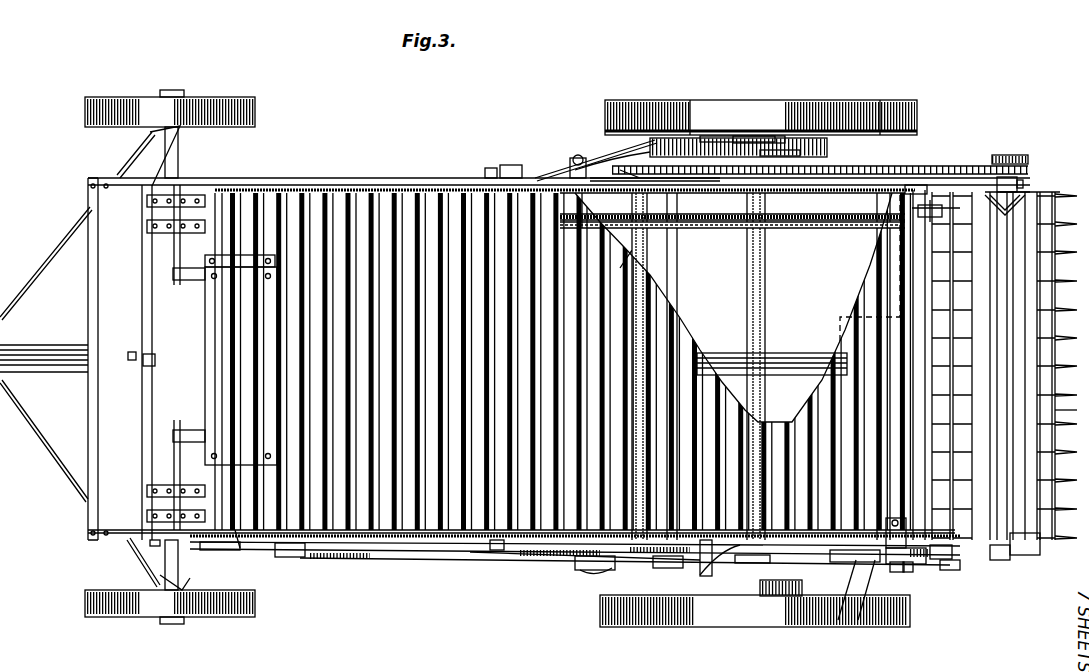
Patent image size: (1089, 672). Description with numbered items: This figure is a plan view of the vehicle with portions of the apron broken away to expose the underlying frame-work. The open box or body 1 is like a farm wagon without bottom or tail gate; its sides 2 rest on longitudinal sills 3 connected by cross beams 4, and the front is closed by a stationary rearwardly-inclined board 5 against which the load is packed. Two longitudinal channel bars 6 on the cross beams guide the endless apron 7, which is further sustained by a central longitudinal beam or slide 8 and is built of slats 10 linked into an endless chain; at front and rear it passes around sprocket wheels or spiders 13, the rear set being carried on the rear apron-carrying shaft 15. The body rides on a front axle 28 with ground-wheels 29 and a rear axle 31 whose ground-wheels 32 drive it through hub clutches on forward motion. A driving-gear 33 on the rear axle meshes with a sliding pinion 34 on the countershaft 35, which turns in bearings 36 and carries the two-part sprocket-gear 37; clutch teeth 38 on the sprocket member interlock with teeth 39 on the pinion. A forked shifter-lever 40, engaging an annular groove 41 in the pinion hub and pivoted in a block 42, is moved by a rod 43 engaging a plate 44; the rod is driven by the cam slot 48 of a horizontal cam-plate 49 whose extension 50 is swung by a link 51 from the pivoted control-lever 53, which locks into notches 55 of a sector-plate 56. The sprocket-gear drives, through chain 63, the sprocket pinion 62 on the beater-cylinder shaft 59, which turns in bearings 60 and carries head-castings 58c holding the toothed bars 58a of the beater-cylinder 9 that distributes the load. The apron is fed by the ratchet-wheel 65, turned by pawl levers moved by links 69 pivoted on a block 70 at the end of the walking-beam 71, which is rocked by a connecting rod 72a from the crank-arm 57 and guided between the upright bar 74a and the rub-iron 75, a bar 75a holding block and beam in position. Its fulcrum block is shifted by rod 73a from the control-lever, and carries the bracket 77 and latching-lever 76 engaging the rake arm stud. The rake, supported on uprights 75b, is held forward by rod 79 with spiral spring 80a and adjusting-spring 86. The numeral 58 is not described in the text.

The open box or body 1 is at (54, 359).
The sides 2 is at (360, 184).
The longitudinal sills 3 is at (322, 184).
The cross beams 4 is at (668, 278).
The rearwardly-inclined board 5 is at (210, 474).
The longitudinal channel bars 6 is at (826, 229).
The endless apron 7 is at (686, 352).
The longitudinal beam or slide 8 is at (796, 355).
The beater-cylinder 9 is at (840, 338).
The slats 10 is at (452, 198).
The sprocket wheels or spiders 13 is at (935, 202).
The rear apron-carrying shaft 15 is at (918, 184).
The front axle 28 is at (180, 168).
The ground-wheels 29 is at (226, 100).
The rear axle 31 is at (766, 312).
The ground-wheels 32 is at (770, 100).
The driving-gear 33 is at (838, 100).
The pinion 34 is at (710, 135).
The countershaft 35 is at (686, 300).
The bearings 36 is at (680, 232).
The sprocket-gear 37 is at (590, 152).
The clutch teeth 38 is at (716, 138).
The clutch teeth 39 is at (650, 100).
The forked shifter-lever 40 is at (556, 165).
The annular groove 41 is at (740, 134).
The block 42 is at (528, 160).
The rod 43 is at (655, 170).
The plate 44 is at (574, 156).
The cam slot 48 is at (580, 212).
The horizontal cam-plate 49 is at (572, 565).
The extension 50 is at (594, 572).
The link 51 is at (492, 556).
The control-lever 53 is at (222, 548).
The notches 55 is at (142, 550).
The sector-plate 56 is at (158, 546).
The crank-arm 57 is at (665, 568).
The rake 58 is at (1050, 350).
The bars 58a is at (1048, 425).
The head-castings 58c is at (1040, 195).
The beater-cylinder shaft 59 is at (1010, 153).
The bearings 60 is at (1005, 560).
The sprocket pinion 62 is at (1020, 176).
The chain 63 is at (866, 167).
The ratchet-wheel 65 is at (955, 560).
The links 69 is at (950, 572).
The block 70 is at (870, 615).
The walking-beam 71 is at (836, 563).
The connecting rod 72a is at (700, 570).
The rod 73a is at (290, 558).
The upright bar 74a is at (706, 580).
The rub-iron 75 is at (708, 580).
The bar 75a is at (790, 565).
The uprights 75b is at (900, 566).
The latching-lever 76 is at (832, 620).
The bracket 77 is at (850, 630).
The rod 79 is at (640, 558).
The spiral spring 80a is at (545, 560).
The adjusting-spring 86 is at (332, 562).